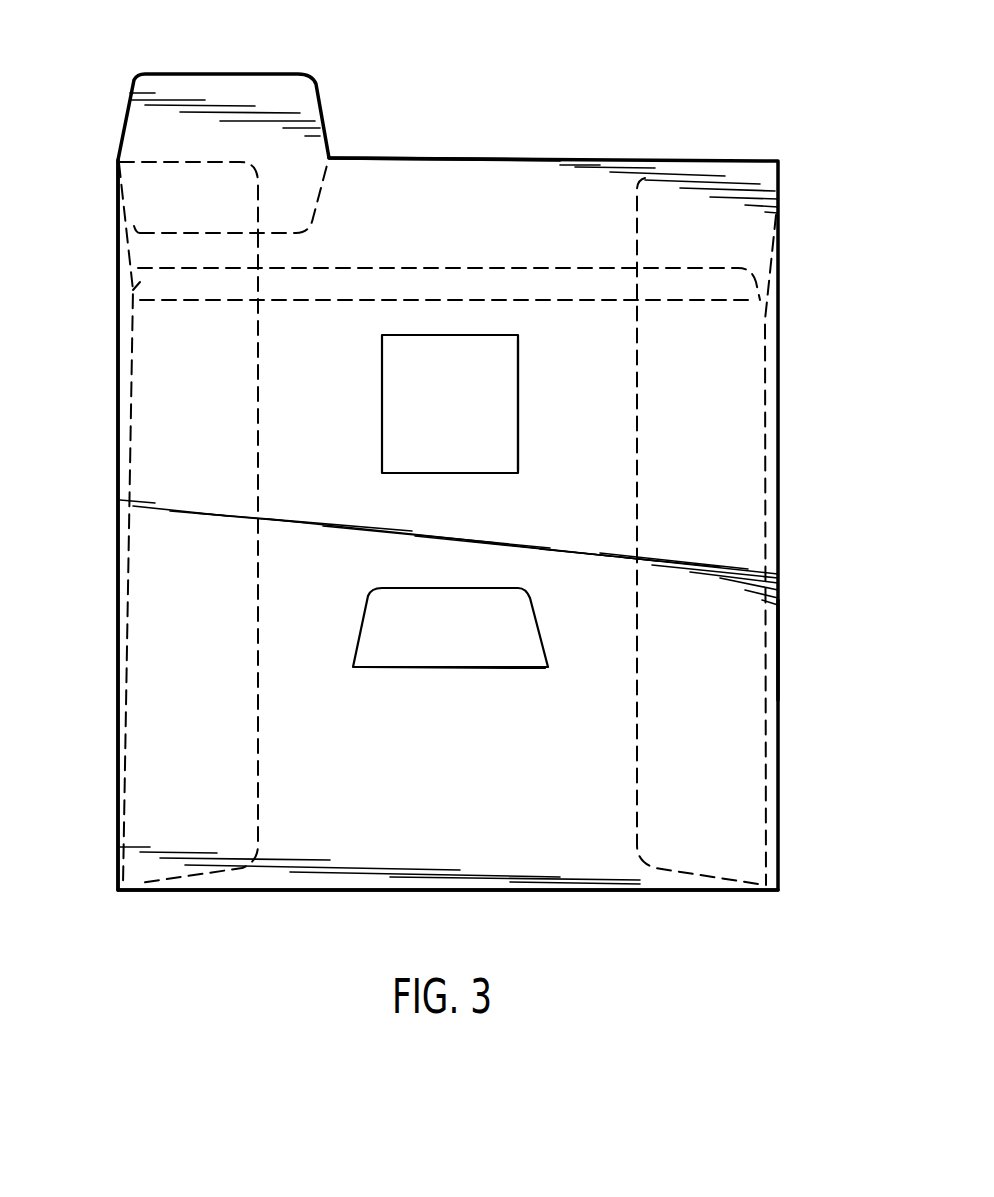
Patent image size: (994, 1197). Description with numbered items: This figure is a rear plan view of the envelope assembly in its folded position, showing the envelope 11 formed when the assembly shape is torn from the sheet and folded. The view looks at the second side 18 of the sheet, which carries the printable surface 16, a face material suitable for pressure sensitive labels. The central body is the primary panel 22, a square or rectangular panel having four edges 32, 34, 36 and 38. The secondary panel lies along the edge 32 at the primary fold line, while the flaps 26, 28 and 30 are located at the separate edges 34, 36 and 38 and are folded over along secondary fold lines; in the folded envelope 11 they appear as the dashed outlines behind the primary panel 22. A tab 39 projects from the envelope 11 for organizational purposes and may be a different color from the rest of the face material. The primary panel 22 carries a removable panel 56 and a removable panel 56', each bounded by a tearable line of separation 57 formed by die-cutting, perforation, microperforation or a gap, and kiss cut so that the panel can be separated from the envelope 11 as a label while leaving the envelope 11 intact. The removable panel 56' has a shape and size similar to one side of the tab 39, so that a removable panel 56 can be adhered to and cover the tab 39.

The envelope 11 is at (613, 112).
The printable surface 16 is at (622, 473).
The second side 18 is at (461, 798).
The primary panel 22 is at (610, 598).
The flap 26 is at (740, 773).
The flap 28 is at (167, 733).
The flap 30 is at (537, 182).
The edge 32 is at (232, 890).
The edge 34 is at (778, 553).
The edge 36 is at (397, 157).
The edge 38 is at (117, 612).
The tab 39 is at (302, 98).
The removable panel 56 is at (404, 404).
The removable panel 56' is at (477, 649).
The tearable line of separation 57 is at (520, 410).